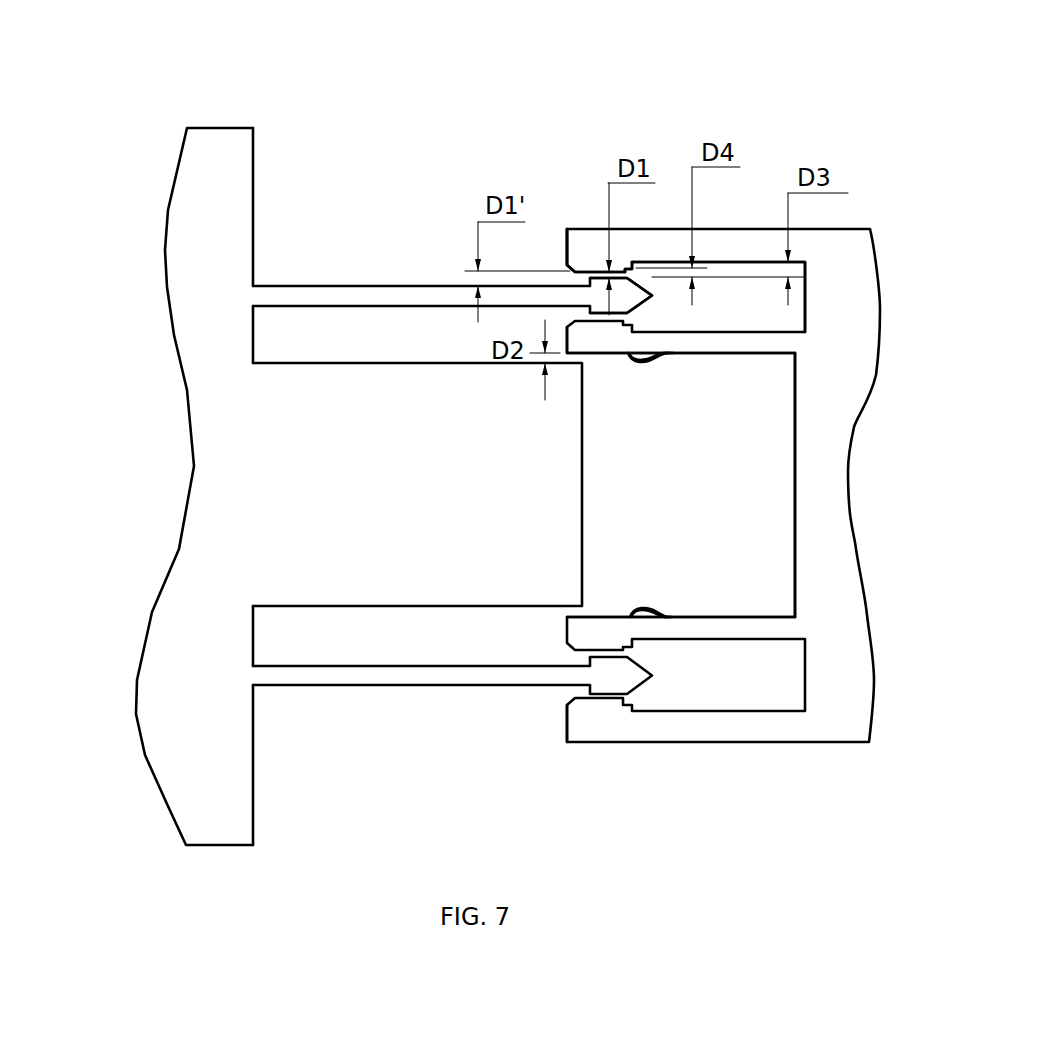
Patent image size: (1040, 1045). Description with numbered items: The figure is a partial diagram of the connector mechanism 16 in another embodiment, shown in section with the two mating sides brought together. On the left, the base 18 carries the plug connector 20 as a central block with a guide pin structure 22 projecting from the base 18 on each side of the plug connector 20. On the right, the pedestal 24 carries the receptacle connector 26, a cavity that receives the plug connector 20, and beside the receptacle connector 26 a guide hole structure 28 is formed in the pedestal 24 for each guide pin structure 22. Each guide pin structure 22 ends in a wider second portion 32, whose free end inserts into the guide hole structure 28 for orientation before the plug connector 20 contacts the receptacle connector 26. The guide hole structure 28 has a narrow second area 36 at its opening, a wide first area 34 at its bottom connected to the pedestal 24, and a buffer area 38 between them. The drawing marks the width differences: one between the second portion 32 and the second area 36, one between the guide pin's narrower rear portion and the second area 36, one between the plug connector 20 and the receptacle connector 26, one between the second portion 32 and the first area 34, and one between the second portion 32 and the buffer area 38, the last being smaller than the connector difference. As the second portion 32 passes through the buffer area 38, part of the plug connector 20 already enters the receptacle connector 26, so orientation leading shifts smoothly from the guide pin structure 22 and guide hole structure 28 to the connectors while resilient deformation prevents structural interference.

The connector mechanism 16 is at (930, 128).
The base 18 is at (216, 468).
The plug connector 20 is at (565, 525).
The guide pin structure 22 is at (462, 670).
The pedestal 24 is at (824, 453).
The receptacle connector 26 is at (763, 515).
The guide hole structure 28 is at (783, 105).
The second portion 32 is at (637, 297).
The first area 34 is at (727, 245).
The second area 36 is at (583, 243).
The buffer area 38 is at (623, 263).